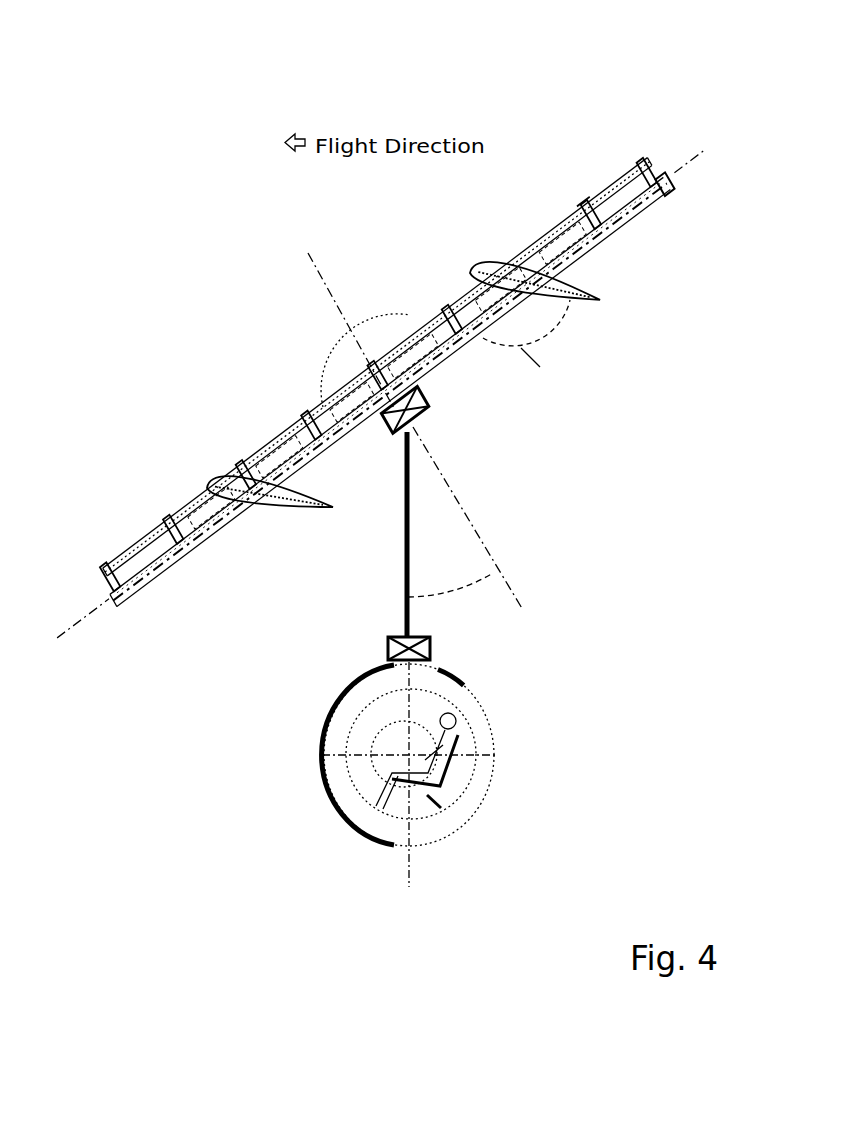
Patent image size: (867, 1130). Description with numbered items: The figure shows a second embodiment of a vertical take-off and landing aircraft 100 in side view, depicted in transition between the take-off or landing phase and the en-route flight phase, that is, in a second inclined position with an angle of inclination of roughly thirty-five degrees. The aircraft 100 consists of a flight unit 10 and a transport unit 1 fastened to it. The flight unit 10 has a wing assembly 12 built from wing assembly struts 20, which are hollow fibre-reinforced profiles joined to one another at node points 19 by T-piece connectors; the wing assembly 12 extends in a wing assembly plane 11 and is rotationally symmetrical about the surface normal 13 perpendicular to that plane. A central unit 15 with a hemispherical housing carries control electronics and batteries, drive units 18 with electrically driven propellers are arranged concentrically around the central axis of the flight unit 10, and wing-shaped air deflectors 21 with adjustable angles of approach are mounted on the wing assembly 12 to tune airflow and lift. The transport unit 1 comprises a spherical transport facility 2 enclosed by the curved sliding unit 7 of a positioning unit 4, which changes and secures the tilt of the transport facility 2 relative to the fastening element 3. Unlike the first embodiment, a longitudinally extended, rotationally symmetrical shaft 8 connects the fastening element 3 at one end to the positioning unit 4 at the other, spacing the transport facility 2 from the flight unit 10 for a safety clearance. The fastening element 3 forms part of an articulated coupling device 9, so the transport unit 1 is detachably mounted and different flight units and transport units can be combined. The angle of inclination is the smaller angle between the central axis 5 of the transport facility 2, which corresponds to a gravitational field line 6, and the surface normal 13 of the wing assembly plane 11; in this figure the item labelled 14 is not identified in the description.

The aircraft 100 is at (178, 81).
The transport unit 1 is at (345, 859).
The transport facility 2 is at (480, 793).
The fastening element 3 is at (449, 411).
The coupling device 9 is at (427, 407).
The positioning unit 4 is at (385, 648).
The central axis 5 is at (422, 804).
The gravitational field line 6 is at (410, 874).
The curved sliding unit 7 is at (327, 793).
The longitudinally extended shaft 8 is at (404, 512).
The flight unit 10 is at (191, 447).
The wing assembly plane 11 is at (389, 357).
The wing boom 14 is at (681, 166).
The wing assembly 12 is at (425, 391).
The wing assembly struts 20 is at (630, 207).
The surface normal 13 is at (328, 281).
The central unit 15 is at (326, 361).
The drive units 18 is at (588, 206).
The node points 19 is at (673, 182).
The air deflectors 21 is at (480, 267).